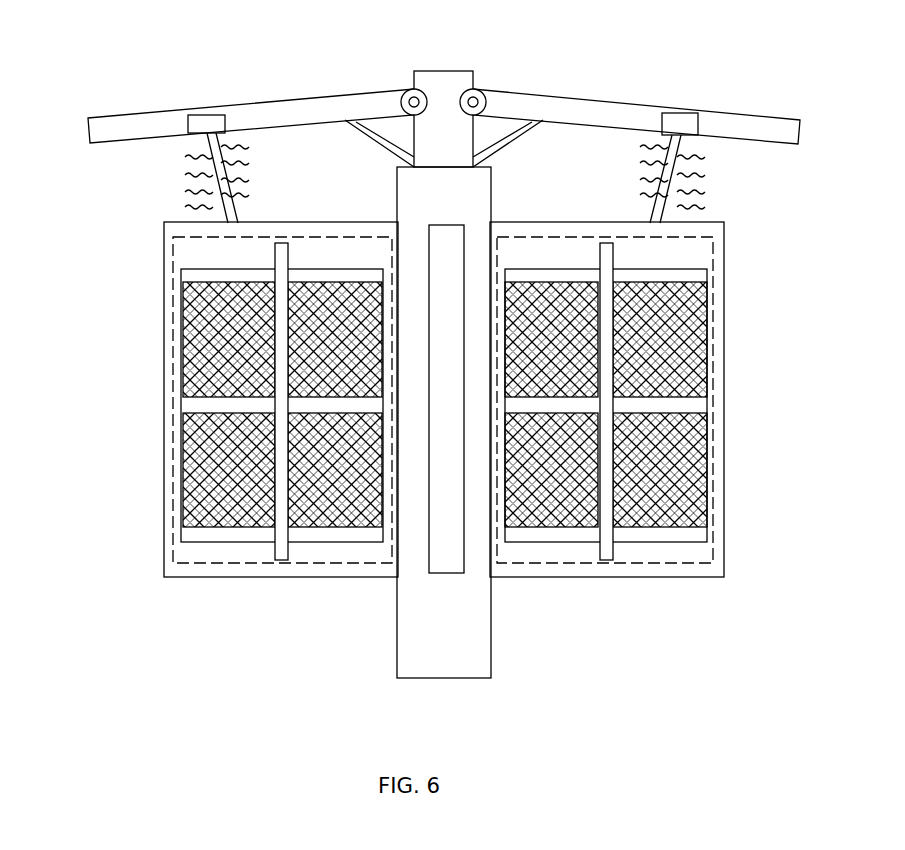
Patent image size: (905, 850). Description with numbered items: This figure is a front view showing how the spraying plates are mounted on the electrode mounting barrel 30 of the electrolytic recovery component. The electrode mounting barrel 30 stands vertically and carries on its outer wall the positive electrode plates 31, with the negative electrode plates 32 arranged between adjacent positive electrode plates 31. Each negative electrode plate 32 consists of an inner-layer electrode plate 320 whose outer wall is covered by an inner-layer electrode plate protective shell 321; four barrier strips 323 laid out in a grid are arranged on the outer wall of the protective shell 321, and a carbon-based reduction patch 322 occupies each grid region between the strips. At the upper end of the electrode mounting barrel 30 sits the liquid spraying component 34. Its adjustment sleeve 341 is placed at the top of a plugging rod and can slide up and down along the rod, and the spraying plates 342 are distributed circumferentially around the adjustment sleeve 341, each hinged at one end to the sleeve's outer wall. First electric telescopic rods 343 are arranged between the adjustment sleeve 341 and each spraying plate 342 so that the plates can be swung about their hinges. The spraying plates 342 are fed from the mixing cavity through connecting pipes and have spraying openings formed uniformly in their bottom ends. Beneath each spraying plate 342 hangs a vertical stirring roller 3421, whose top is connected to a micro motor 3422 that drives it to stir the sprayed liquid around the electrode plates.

The electrode mounting barrel 30 is at (415, 615).
The positive electrode plate 31 is at (448, 558).
The negative electrode plate 32 is at (170, 547).
The inner-layer electrode plate 320 is at (170, 400).
The inner-layer electrode plate protective shell 321 is at (165, 335).
The carbon-based reduction patch 322 is at (193, 480).
The barrier strip 323 is at (270, 533).
The liquid spraying component 34 is at (408, 90).
The adjustment sleeve 341 is at (437, 93).
The spraying plate 342 is at (132, 123).
The vertical stirring roller 3421 is at (188, 173).
The micro motor 3422 is at (207, 108).
The first electric telescopic rod 343 is at (373, 137).